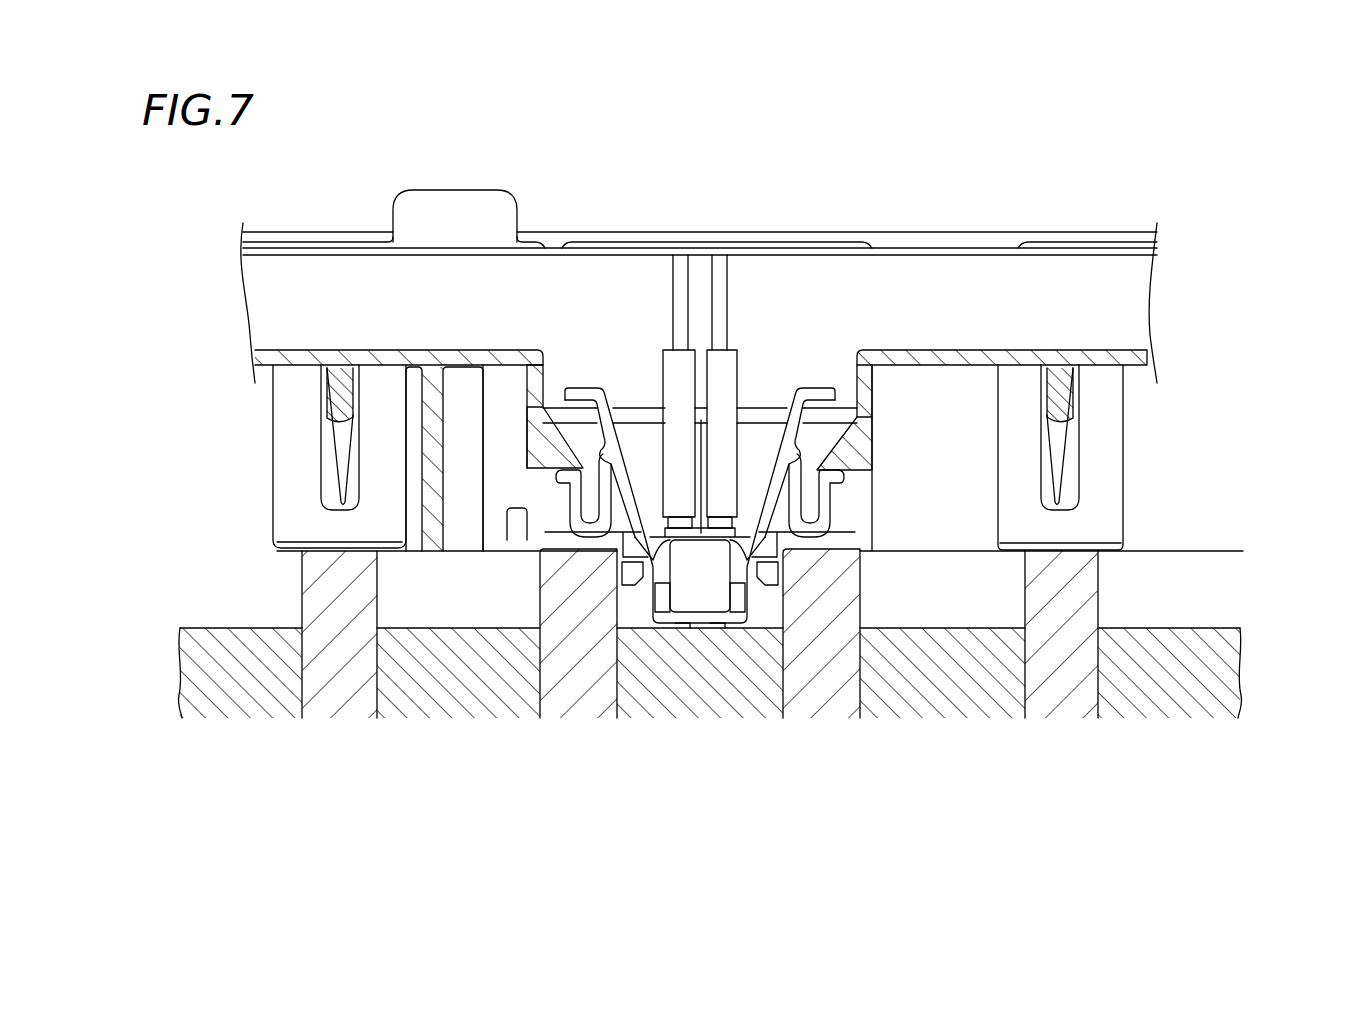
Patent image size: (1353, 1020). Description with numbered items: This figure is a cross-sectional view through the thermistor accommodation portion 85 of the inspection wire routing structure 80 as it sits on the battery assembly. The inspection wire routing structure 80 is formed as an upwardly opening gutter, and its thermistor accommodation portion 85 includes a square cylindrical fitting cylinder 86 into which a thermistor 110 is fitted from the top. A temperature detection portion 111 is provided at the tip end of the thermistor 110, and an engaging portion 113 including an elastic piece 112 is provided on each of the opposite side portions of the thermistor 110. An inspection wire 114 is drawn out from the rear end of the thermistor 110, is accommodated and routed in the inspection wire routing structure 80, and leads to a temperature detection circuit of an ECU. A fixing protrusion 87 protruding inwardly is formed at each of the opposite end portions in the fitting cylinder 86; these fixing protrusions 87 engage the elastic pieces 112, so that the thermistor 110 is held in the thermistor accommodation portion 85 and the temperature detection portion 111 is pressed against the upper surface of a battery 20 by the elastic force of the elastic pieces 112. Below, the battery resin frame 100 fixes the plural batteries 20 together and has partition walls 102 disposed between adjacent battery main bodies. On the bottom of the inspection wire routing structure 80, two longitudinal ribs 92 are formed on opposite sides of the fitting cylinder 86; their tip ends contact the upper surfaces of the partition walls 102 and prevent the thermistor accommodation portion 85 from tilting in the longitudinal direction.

The battery 20 is at (263, 724).
The inspection wire routing structure 80 is at (1081, 189).
The thermistor accommodation portion 85 is at (828, 338).
The fitting cylinder 86 is at (863, 393).
The fixing protrusion 87 is at (562, 458).
The longitudinal rib 92 is at (290, 522).
The battery resin frame 100 is at (1103, 618).
The partition wall 102 is at (313, 588).
The thermistor 110 is at (647, 594).
The temperature detection portion 111 is at (700, 630).
The elastic piece 112 is at (567, 503).
The engaging portion 113 is at (603, 393).
The inspection wire 114 is at (720, 260).